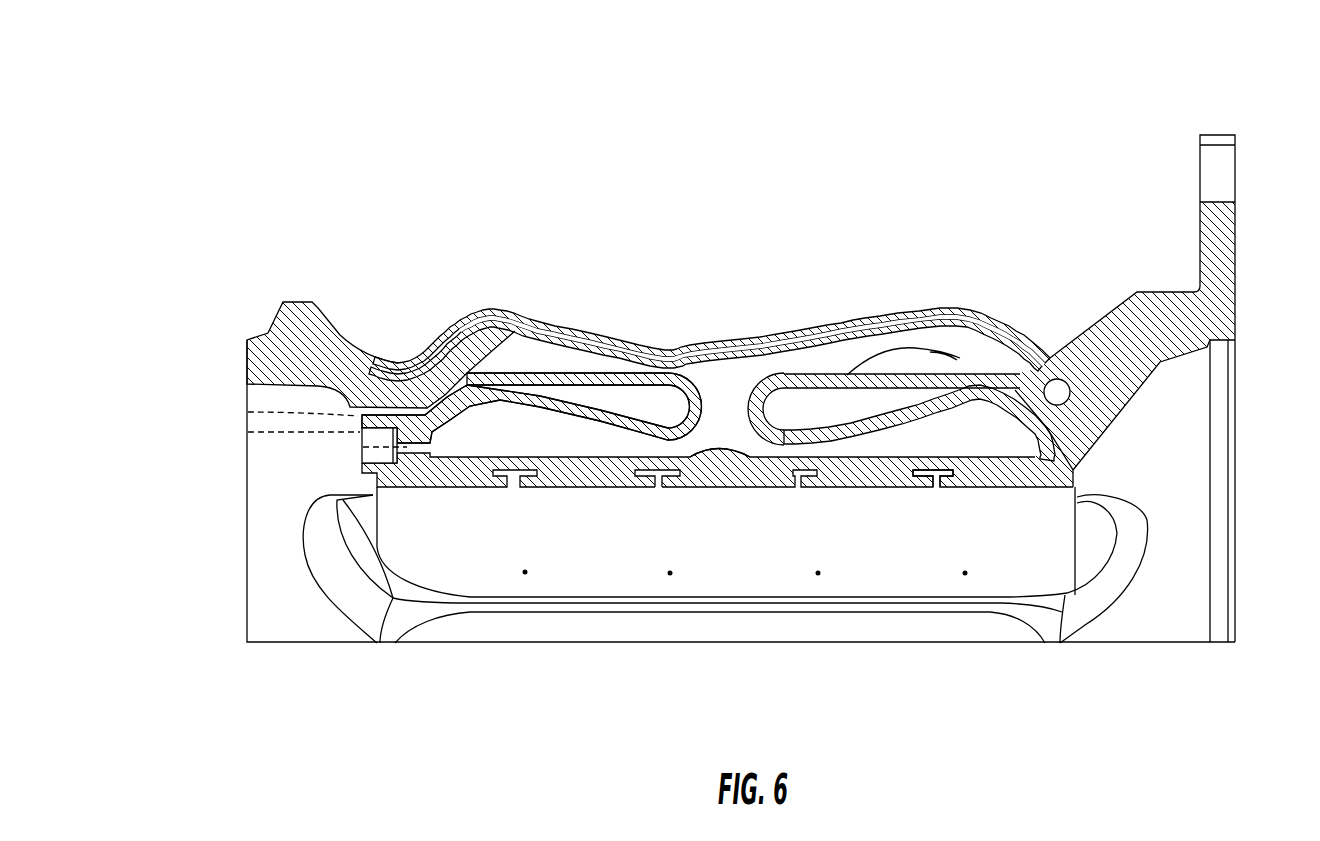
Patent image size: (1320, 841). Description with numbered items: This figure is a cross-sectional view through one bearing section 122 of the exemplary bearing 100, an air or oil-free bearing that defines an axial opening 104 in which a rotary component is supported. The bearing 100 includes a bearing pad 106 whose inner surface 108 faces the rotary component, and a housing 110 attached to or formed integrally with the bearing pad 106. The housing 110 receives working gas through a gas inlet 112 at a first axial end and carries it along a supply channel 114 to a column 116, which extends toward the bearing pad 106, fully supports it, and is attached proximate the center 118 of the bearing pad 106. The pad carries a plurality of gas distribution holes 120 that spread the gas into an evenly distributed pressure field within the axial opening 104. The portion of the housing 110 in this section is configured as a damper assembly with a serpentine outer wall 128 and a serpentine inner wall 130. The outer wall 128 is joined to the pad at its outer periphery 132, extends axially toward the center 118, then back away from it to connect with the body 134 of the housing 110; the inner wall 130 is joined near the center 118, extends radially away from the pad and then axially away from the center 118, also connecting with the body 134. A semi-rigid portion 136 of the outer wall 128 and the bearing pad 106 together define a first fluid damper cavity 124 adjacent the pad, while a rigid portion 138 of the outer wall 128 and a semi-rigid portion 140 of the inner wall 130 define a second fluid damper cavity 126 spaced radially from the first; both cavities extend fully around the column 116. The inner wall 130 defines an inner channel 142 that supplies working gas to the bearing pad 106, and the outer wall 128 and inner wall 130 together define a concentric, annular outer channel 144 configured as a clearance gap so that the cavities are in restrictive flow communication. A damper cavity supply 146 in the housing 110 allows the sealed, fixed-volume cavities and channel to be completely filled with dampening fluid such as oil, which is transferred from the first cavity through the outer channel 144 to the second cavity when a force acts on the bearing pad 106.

The bearing 100 is at (1063, 105).
The axial opening 104 is at (957, 626).
The bearing pad 106 is at (1053, 528).
The inner surface 108 is at (1077, 492).
The housing 110 is at (1000, 300).
The gas inlet 112 is at (270, 322).
The supply channel 114 is at (606, 338).
The column 116 is at (760, 411).
The center 118 is at (727, 512).
The gas distribution holes 120 is at (935, 493).
The bearing section 122 is at (955, 268).
The first fluid damper cavity 124 is at (511, 434).
The second fluid damper cavity 126 is at (540, 363).
The outer wall 128 is at (648, 442).
The inner wall 130 is at (733, 390).
The outer periphery 132 is at (1078, 450).
The body 134 is at (1138, 318).
The semi-rigid portion 136 is at (567, 430).
The rigid portion 138 is at (583, 363).
The semi-rigid portion 140 is at (573, 338).
The inner channel 142 is at (742, 382).
The outer channel 144 is at (790, 411).
The damper cavity supply 146 is at (362, 450).